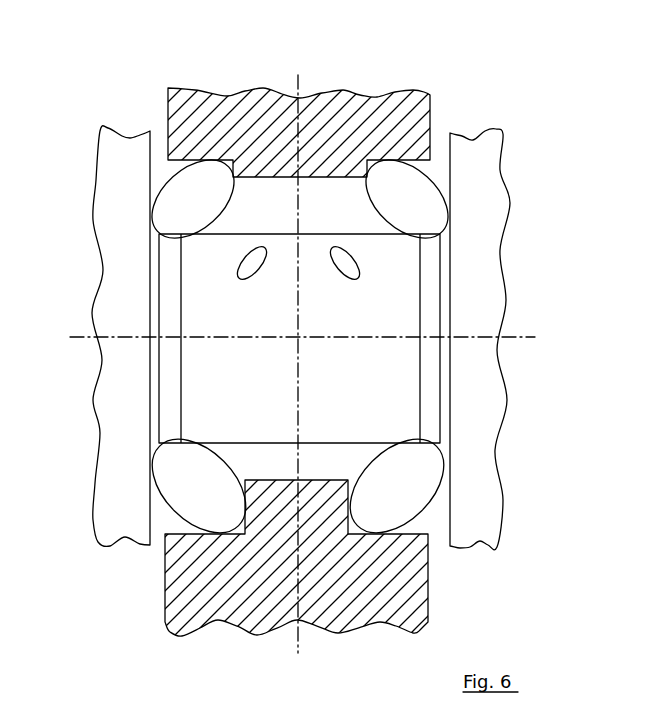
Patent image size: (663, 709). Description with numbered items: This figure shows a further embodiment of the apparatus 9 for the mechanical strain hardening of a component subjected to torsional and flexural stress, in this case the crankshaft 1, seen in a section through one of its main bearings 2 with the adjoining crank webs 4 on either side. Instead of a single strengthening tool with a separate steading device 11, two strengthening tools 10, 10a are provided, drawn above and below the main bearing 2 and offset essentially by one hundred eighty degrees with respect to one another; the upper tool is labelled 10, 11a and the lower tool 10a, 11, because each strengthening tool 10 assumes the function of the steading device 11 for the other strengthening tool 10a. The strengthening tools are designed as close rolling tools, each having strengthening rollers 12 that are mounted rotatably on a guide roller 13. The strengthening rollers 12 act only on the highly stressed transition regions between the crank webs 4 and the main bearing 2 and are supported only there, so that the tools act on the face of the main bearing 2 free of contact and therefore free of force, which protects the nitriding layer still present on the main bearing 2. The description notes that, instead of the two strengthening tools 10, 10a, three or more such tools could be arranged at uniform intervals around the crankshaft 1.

The crankshaft 1 is at (108, 302).
The main bearing 2 is at (241, 432).
The crank web 4 is at (264, 338).
The apparatus 9 is at (449, 106).
The strengthening tool 10 is at (237, 106).
The upper ring portion 11a is at (237, 106).
The strengthening tool 10a is at (236, 558).
The steading device 11 is at (150, 585).
The strengthening roller 12 is at (175, 187).
The guide roller 13 is at (368, 127).